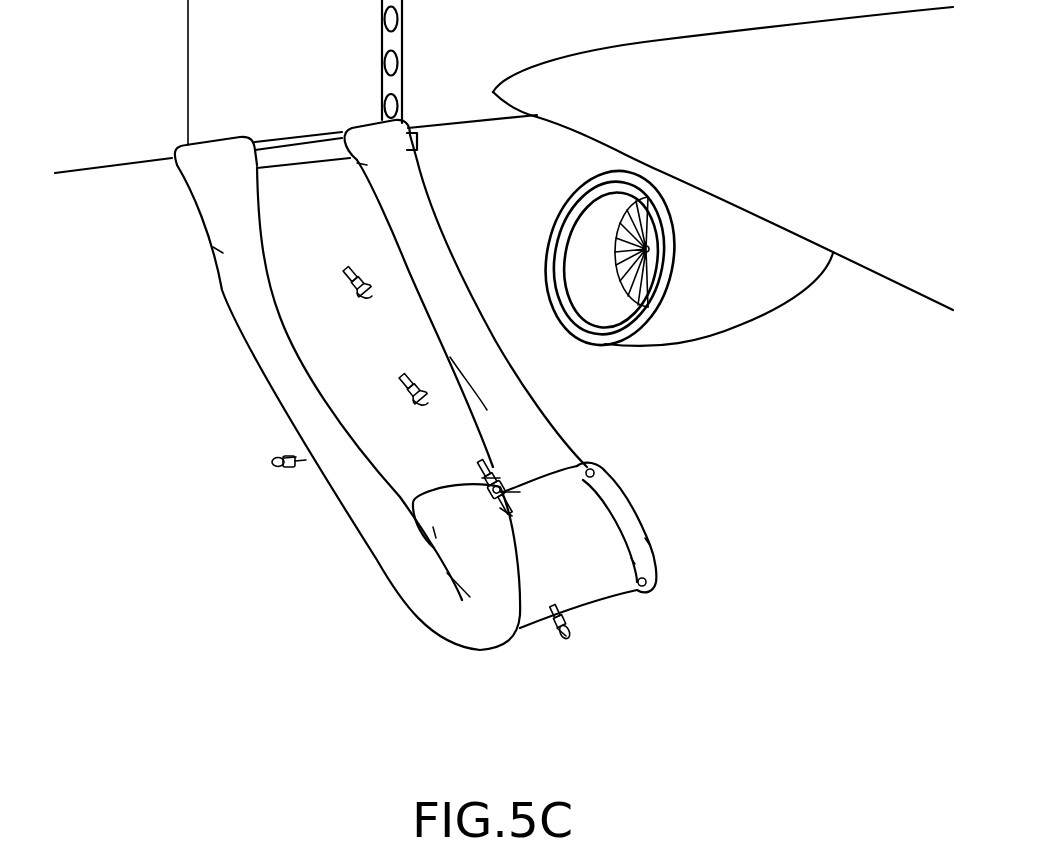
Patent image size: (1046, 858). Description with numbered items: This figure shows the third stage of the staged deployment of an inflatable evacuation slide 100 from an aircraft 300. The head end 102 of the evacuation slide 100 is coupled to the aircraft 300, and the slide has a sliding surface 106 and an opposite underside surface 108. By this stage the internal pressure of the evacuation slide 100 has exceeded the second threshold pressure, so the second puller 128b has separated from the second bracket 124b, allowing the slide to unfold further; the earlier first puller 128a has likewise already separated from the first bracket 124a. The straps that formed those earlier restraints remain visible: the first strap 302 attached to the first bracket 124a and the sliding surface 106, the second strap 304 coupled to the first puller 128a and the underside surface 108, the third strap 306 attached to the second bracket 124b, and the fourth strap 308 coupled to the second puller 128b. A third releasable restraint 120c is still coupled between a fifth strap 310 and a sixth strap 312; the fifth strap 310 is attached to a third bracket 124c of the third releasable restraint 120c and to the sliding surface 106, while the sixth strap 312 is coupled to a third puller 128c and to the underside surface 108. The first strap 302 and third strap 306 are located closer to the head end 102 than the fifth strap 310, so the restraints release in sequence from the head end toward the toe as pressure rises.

The evacuation slide 100 is at (349, 383).
The head end 102 is at (278, 165).
The sliding surface 106 is at (315, 208).
The underside surface 108 is at (580, 581).
The third releasable restraint 120c is at (512, 482).
The first bracket 124a is at (357, 298).
The second bracket 124b is at (413, 402).
The third bracket 124c is at (483, 487).
The first puller 128a is at (273, 463).
The second puller 128b is at (556, 630).
The third puller 128c is at (510, 493).
The aircraft 300 is at (135, 31).
The first strap 302 is at (356, 266).
The second strap 304 is at (308, 465).
The third strap 306 is at (412, 372).
The fourth strap 308 is at (567, 606).
The fifth strap 310 is at (490, 463).
The sixth strap 312 is at (503, 510).